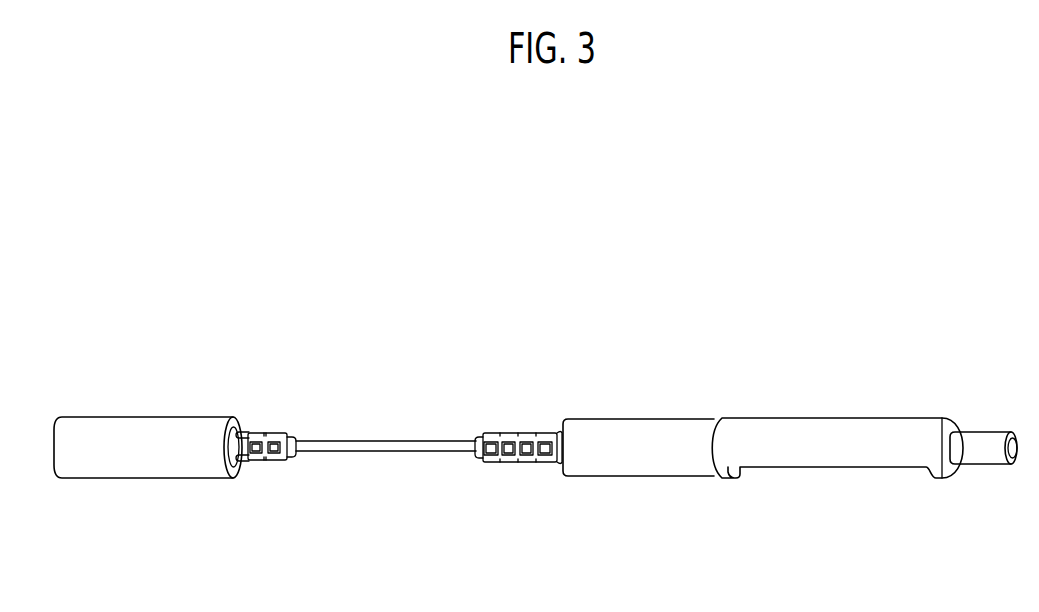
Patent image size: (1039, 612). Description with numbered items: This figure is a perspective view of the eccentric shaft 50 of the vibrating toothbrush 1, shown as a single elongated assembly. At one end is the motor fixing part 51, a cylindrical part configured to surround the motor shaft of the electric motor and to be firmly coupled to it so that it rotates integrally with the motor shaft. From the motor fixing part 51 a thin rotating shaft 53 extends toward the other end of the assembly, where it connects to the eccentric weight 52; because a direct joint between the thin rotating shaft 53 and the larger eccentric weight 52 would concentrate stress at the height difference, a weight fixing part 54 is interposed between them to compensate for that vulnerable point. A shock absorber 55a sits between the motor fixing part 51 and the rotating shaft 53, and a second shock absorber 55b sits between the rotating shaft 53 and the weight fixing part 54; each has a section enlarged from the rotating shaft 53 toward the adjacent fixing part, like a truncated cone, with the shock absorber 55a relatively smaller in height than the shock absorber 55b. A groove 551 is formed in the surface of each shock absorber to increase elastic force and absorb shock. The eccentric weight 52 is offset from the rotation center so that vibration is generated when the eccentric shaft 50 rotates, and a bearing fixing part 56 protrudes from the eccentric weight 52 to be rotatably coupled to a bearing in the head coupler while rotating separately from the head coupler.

The vibrating toothbrush 1 is at (946, 252).
The eccentric shaft 50 is at (742, 320).
The motor fixing part 51 is at (174, 508).
The eccentric weight 52 is at (828, 493).
The rotating shaft 53 is at (383, 490).
The weight fixing part 54 is at (655, 507).
The shock absorber 55a is at (292, 497).
The shock absorber 55b is at (557, 497).
The groove 551 is at (520, 410).
The bearing fixing part 56 is at (988, 495).